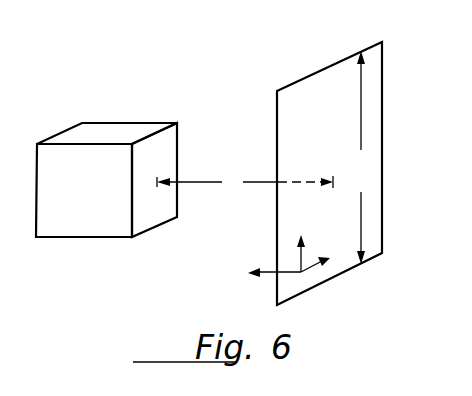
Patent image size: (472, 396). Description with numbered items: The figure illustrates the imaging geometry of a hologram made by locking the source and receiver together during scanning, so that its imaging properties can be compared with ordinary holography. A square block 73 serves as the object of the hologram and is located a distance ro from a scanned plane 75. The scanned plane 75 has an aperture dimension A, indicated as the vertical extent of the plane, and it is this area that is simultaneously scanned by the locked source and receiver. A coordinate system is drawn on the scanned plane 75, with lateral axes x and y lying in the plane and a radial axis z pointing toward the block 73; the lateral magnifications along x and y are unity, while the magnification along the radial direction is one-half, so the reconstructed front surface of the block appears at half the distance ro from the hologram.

The square block 73 is at (113, 132).
The scanned plane 75 is at (373, 76).
The distance r0 ro is at (245, 184).
The aperture dimension A is at (361, 157).
The x axis x is at (324, 259).
The y axis y is at (302, 244).
The z axis z is at (267, 274).